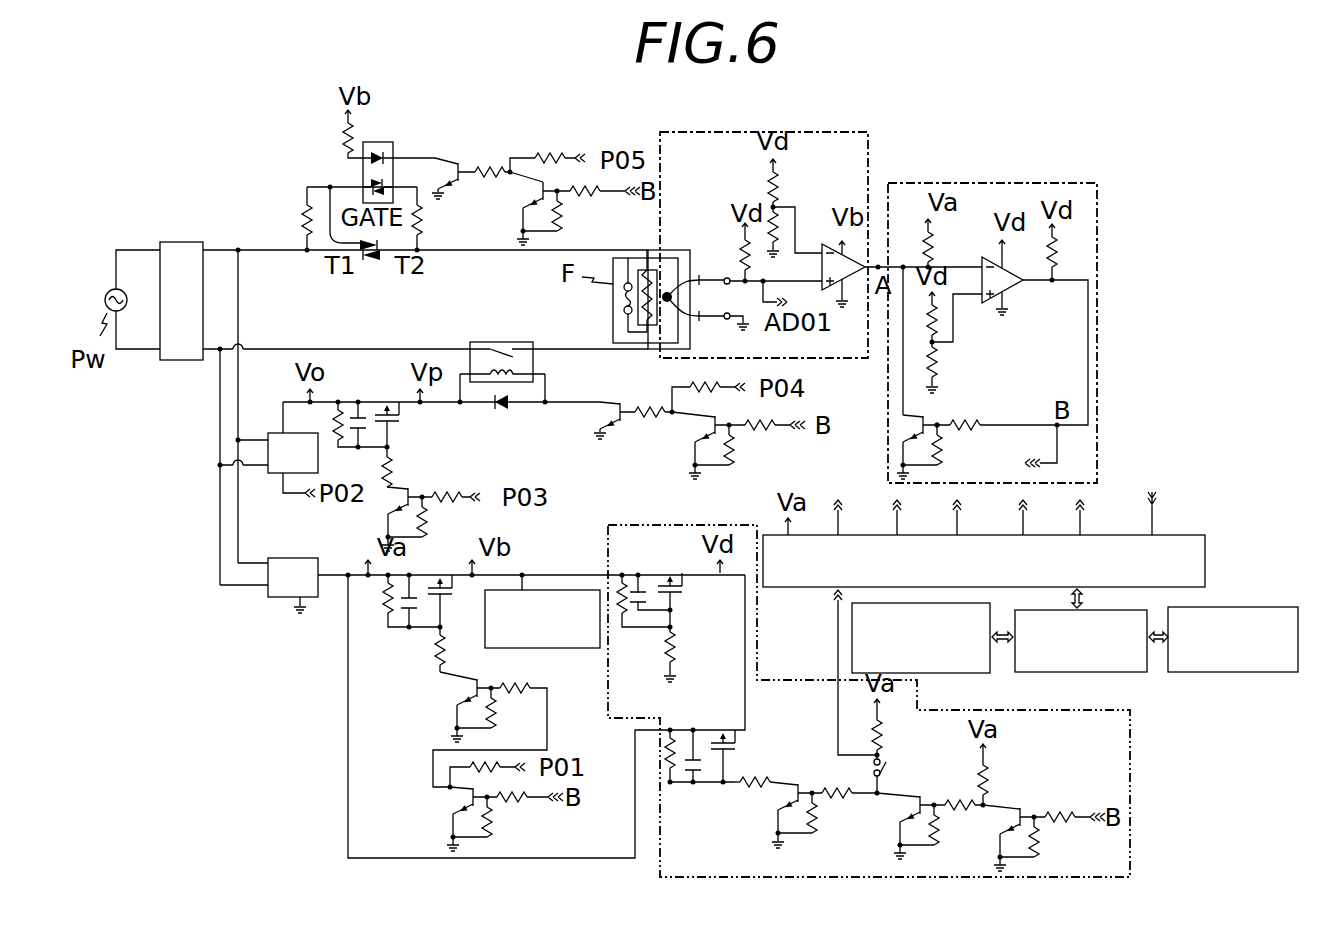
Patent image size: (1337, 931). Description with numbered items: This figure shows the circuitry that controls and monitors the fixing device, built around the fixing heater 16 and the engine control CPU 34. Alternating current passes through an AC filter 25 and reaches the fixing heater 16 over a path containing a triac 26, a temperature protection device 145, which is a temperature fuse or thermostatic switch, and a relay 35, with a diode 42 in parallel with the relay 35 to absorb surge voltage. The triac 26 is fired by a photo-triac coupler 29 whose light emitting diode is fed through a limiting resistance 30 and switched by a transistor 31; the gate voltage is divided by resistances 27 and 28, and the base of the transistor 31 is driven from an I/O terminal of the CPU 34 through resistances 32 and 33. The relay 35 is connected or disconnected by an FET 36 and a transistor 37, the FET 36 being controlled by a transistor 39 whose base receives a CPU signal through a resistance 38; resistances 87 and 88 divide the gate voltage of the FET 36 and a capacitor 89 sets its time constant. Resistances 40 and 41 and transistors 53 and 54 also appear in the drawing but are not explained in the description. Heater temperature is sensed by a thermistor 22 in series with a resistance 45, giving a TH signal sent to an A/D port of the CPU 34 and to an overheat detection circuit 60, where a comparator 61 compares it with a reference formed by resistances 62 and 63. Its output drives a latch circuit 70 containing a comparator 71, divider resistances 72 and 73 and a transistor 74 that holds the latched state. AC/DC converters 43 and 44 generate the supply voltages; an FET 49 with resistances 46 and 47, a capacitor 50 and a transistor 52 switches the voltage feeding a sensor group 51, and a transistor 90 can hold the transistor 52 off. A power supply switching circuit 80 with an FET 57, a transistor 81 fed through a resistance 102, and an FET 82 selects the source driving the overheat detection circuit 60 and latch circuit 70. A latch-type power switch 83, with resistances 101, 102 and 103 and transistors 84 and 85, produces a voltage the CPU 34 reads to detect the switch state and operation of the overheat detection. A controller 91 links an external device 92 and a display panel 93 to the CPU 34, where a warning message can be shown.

The fixing heater 16 is at (644, 268).
The thermistor 22 is at (680, 289).
The AC filter 25 is at (165, 361).
The triac 26 is at (370, 262).
The resistance 27 is at (304, 212).
The resistance 28 is at (425, 227).
The photo-triac coupler 29 is at (396, 148).
The resistance 30 is at (336, 138).
The transistor 31 is at (458, 163).
The resistance 32 is at (494, 167).
The resistance 33 is at (546, 152).
The engine control unit (CPU) 34 is at (1178, 537).
The relay 35 is at (488, 340).
The FET 36 is at (405, 417).
The transistor 37 is at (618, 441).
The resistance 38 is at (460, 494).
The transistor 39 is at (390, 511).
The resistor 40 is at (628, 405).
The resistor 41 is at (688, 388).
The diode 42 is at (505, 410).
The AC/DC converter 43 is at (277, 598).
The AC/DC converter 44 is at (275, 475).
The resistance 45 is at (739, 251).
The resistance 46 is at (387, 604).
The resistance 47 is at (440, 654).
The FET 49 is at (448, 599).
The capacitor 50 is at (405, 615).
The sensor group 51 is at (578, 650).
The transistor 52 is at (460, 699).
The transistor 53 is at (700, 438).
The transistor 54 is at (527, 215).
The FET 57 is at (682, 600).
The overheat detection circuit 60 is at (872, 175).
The comparator 61 is at (853, 305).
The resistance 62 is at (786, 184).
The resistance 63 is at (785, 226).
The latch circuit 70 is at (1000, 183).
The comparator 71 is at (1011, 305).
The resistance 72 is at (947, 332).
The resistance 73 is at (947, 370).
The transistor 74 is at (935, 417).
The power supply switching circuit 80 is at (1132, 735).
The transistor 81 is at (778, 799).
The FET 82 is at (745, 750).
The power switch 83 is at (886, 772).
The transistor 84 is at (905, 810).
The transistor 85 is at (1003, 819).
The resistance 87 is at (333, 433).
The resistance 88 is at (402, 473).
The capacitor 89 is at (362, 412).
The transistor 90 is at (456, 804).
The controller 91 is at (1082, 675).
The external device 92 is at (856, 647).
The display panel 93 is at (1253, 675).
The resistance 101 is at (892, 728).
The resistance 102 is at (839, 789).
The resistance 103 is at (820, 826).
The temperature protection device 145 is at (623, 303).